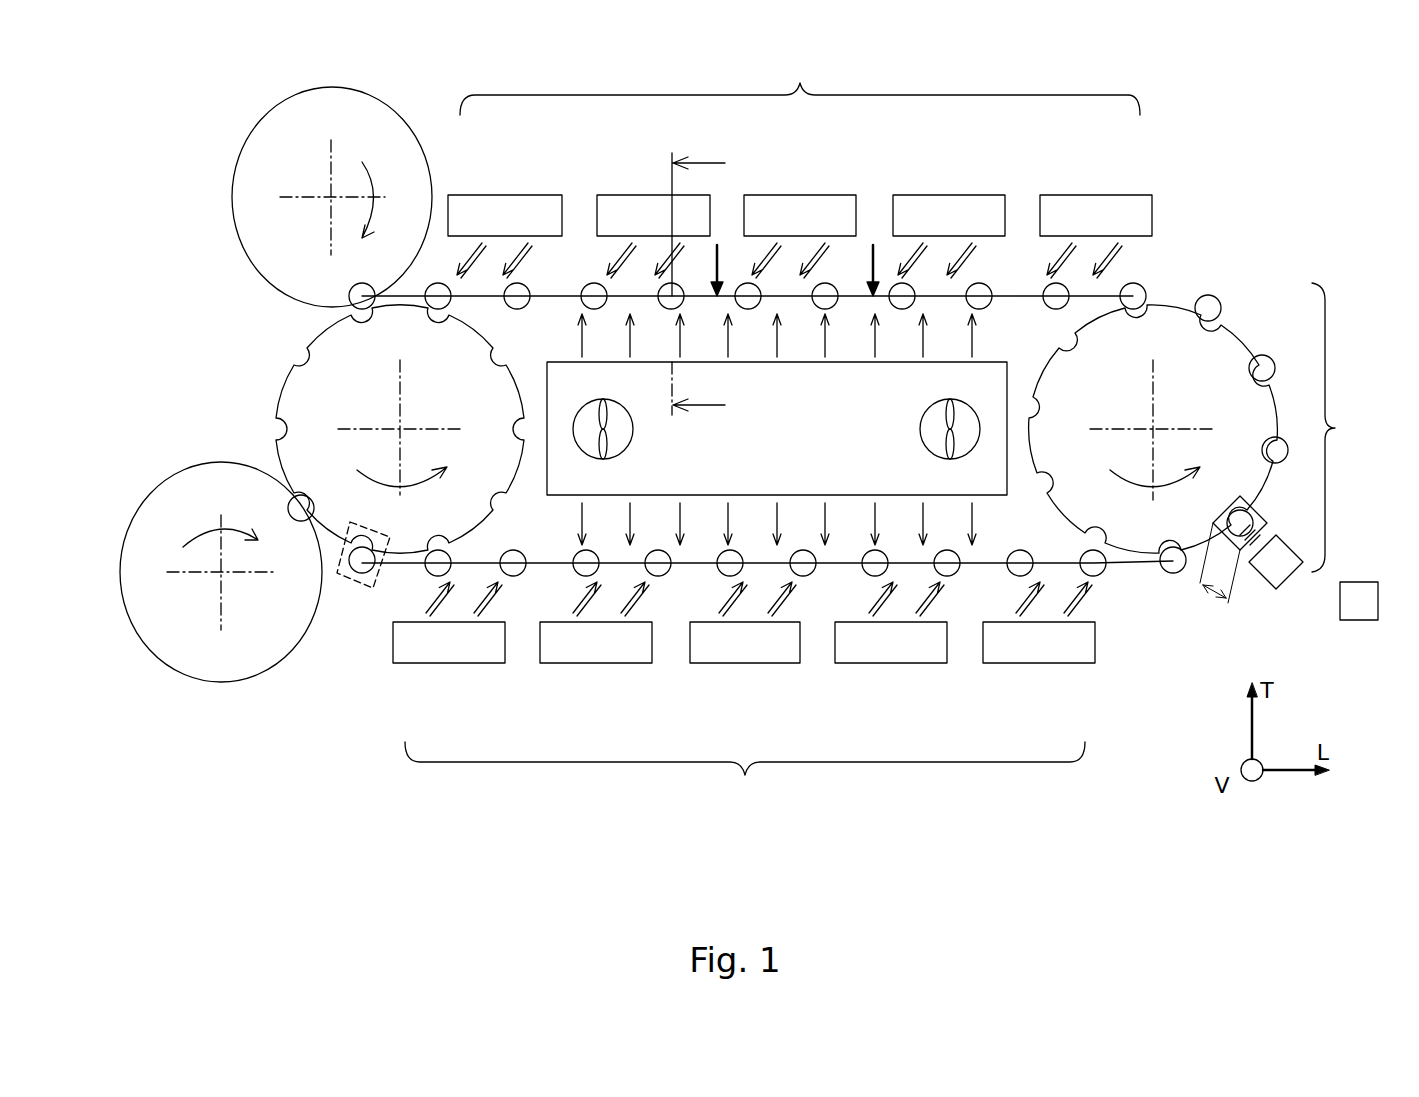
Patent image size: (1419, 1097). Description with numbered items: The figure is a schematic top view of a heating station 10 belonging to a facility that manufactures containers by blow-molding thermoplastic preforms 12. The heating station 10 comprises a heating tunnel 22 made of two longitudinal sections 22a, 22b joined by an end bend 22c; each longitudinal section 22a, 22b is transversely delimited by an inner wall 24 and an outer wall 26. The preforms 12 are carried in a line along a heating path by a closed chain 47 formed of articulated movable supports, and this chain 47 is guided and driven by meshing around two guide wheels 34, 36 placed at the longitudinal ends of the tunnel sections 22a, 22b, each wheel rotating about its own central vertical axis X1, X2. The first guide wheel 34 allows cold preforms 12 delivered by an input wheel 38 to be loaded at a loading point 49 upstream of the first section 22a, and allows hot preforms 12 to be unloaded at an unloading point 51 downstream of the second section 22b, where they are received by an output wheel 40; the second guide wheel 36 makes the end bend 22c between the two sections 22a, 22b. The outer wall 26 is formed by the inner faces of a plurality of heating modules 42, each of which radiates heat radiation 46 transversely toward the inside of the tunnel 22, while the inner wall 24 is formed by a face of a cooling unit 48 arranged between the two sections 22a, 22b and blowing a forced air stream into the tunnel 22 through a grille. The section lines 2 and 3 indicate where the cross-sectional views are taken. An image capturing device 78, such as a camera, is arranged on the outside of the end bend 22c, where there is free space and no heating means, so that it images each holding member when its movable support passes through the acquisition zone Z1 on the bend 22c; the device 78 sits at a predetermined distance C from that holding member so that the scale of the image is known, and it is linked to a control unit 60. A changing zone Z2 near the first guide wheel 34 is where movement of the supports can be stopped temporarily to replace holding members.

The heating station 10 is at (1175, 148).
The preform 12 is at (517, 578).
The heating tunnel 22 is at (969, 630).
The first longitudinal section 22a is at (745, 772).
The second longitudinal section 22b is at (800, 84).
The end bend 22c is at (1348, 427).
The inner wall 24 is at (650, 362).
The outer wall 26 is at (852, 250).
The first guide wheel 34 is at (320, 452).
The second guide wheel 36 is at (1145, 525).
The input wheel 38 is at (185, 620).
The output wheel 40 is at (283, 148).
The heating module 42 is at (1077, 212).
The heat radiation 46 is at (1000, 263).
The closed chain 47 is at (1108, 292).
The cooling unit 48 is at (776, 429).
The loading point 49 is at (298, 508).
The unloading point 51 is at (362, 294).
The controller 60 is at (1292, 578).
The image capturing device 78 is at (1262, 582).
The section line 2 is at (801, 269).
The section line 3 is at (698, 275).
The central vertical axis of first guide wheel X1 is at (398, 428).
The central vertical axis of second guide wheel X2 is at (1160, 422).
The acquisition zone Z1 is at (1268, 515).
The changing zone Z2 is at (355, 588).
The predetermined distance C is at (1217, 568).